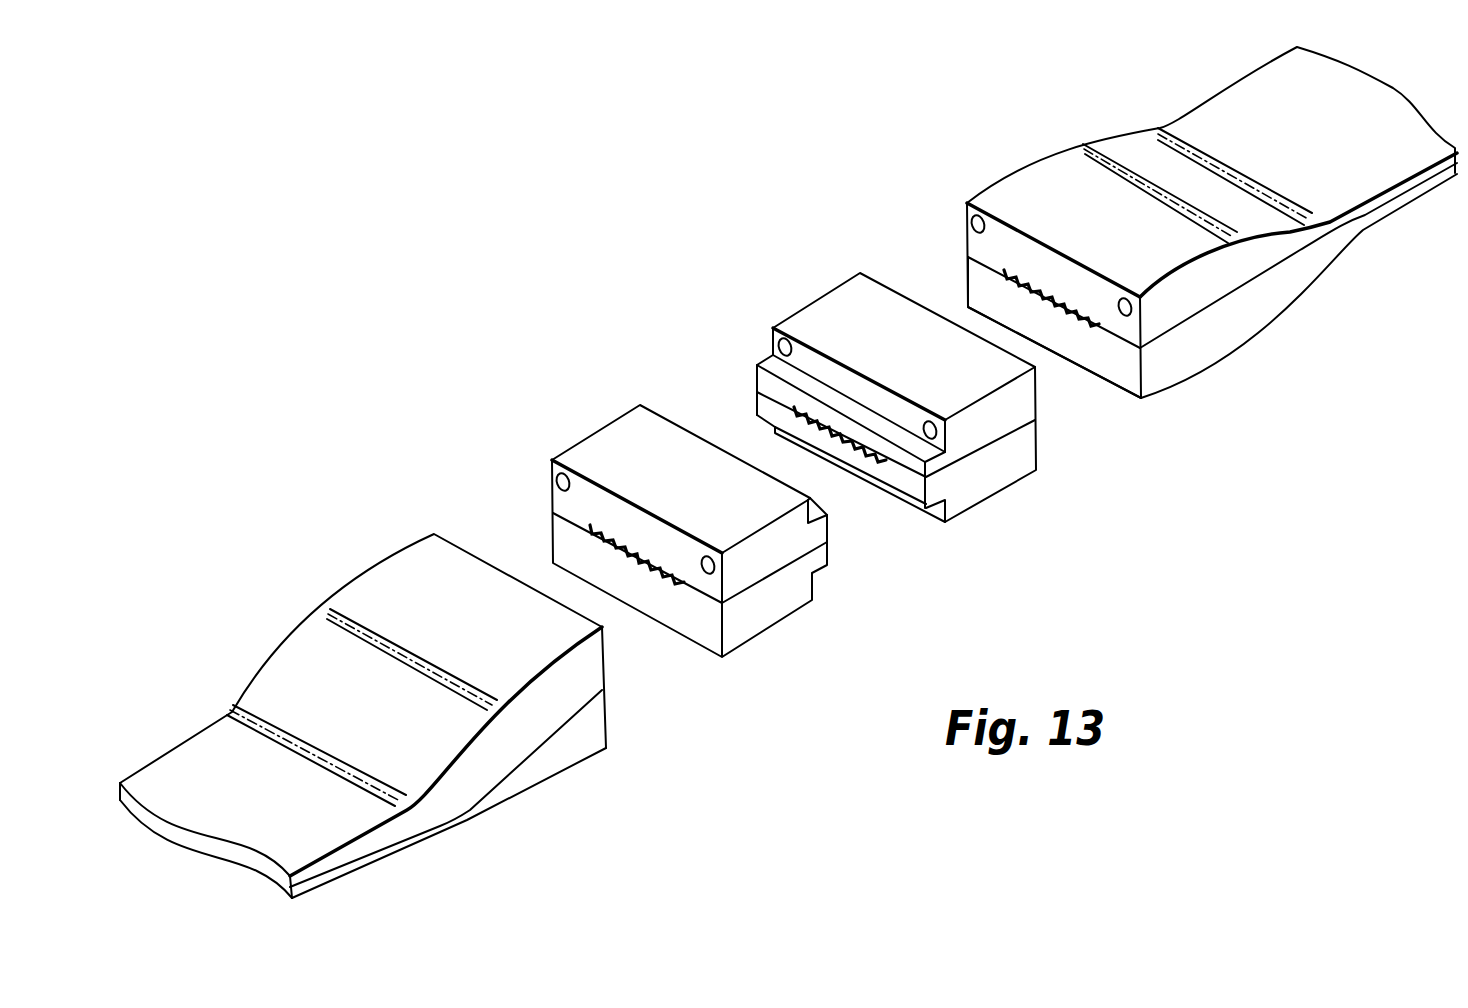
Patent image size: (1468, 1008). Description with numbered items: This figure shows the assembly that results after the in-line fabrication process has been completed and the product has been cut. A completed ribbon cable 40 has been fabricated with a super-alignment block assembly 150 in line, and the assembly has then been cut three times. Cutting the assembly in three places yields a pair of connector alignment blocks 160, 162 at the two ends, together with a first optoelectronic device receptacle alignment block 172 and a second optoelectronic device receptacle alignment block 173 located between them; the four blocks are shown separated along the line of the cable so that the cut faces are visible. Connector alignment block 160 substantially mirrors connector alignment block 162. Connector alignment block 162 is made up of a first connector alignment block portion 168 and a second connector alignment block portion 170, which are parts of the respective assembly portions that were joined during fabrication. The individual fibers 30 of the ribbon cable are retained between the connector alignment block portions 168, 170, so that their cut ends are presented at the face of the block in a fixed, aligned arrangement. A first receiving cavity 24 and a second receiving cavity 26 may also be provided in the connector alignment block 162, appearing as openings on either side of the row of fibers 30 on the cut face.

The super-alignment block assembly 150 is at (542, 282).
The connector alignment block 160 is at (450, 541).
The ribbon cable 40 is at (210, 751).
The second optoelectronic device receptacle alignment block 173 is at (602, 445).
The first optoelectronic device receptacle alignment block 172 is at (820, 310).
The connector alignment block 162 is at (1040, 155).
The first connector alignment block portion 168 is at (995, 200).
The second connector alignment block portion 170 is at (970, 282).
The first receiving cavity 24 is at (972, 226).
The second receiving cavity 26 is at (1121, 314).
The individual fibers 30 is at (1042, 297).